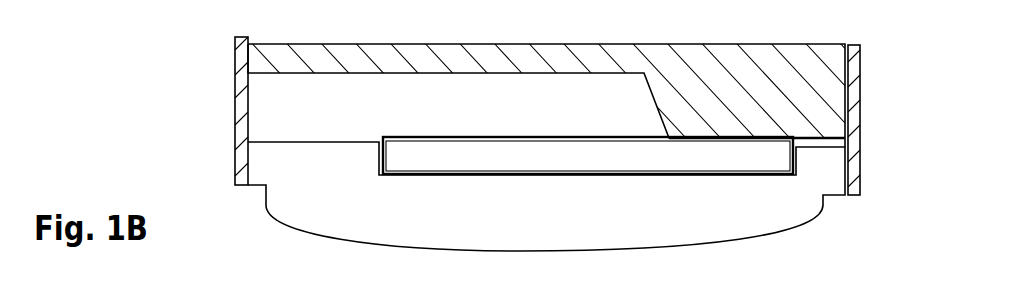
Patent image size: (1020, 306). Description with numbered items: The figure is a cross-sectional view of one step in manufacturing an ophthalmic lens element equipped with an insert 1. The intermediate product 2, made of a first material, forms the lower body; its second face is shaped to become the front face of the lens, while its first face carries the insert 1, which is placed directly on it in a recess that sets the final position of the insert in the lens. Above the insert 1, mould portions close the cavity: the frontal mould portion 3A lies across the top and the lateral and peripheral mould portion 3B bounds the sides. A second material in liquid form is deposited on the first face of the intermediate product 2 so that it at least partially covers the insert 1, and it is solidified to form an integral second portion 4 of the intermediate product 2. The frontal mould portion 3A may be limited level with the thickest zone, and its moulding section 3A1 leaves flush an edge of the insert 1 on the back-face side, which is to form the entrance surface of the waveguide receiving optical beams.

The insert 1 is at (607, 164).
The intermediate product 2 is at (714, 247).
The frontal mould portion 3A is at (716, 77).
The moulding section 3A1 is at (763, 134).
The lateral and peripheral mould portion 3B is at (852, 122).
The second portion 4 is at (311, 110).